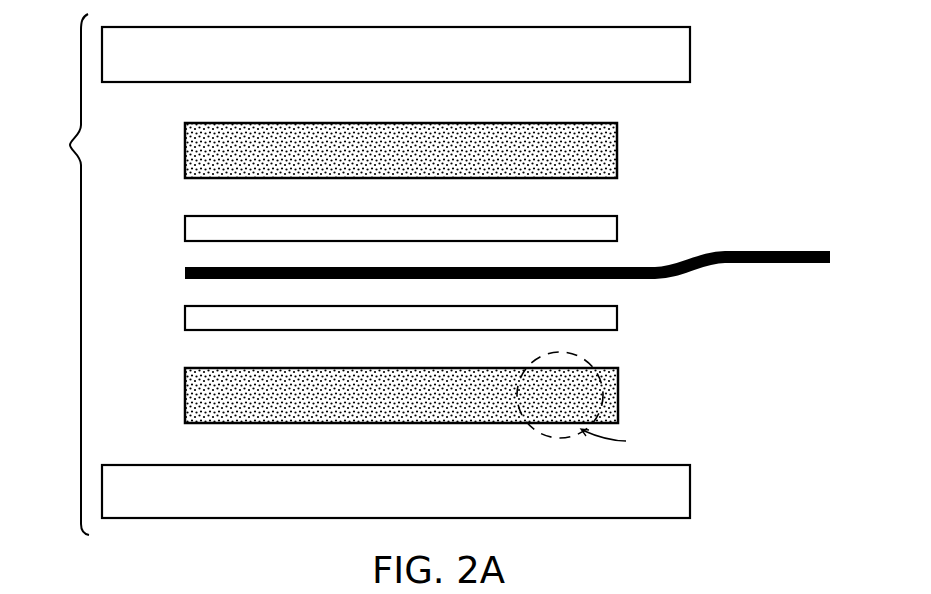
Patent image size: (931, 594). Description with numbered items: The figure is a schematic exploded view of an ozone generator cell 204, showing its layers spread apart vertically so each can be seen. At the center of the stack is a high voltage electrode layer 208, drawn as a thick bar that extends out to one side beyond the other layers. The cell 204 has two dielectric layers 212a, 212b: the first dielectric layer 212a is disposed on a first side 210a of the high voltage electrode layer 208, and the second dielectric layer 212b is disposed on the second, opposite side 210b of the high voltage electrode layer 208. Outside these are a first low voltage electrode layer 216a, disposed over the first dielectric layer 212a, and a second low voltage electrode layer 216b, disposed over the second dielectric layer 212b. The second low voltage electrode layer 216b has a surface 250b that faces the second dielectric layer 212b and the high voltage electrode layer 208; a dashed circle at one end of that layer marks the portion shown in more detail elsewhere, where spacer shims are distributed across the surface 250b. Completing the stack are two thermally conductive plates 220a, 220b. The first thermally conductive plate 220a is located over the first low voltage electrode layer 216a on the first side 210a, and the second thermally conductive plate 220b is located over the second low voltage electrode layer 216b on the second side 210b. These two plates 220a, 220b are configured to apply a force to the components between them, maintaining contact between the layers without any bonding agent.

The ozone generator cell 204 is at (47, 463).
The high voltage electrode layer 208 is at (185, 273).
The first side 210a is at (750, 161).
The second side 210b is at (750, 406).
The first dielectric layer 212a is at (185, 228).
The second dielectric layer 212b is at (185, 318).
The first low voltage electrode layer 216a is at (185, 150).
The second low voltage electrode layer 216b is at (185, 395).
The first thermally conductive plate 220a is at (692, 55).
The second thermally conductive plate 220b is at (692, 492).
The surface 250b is at (604, 361).